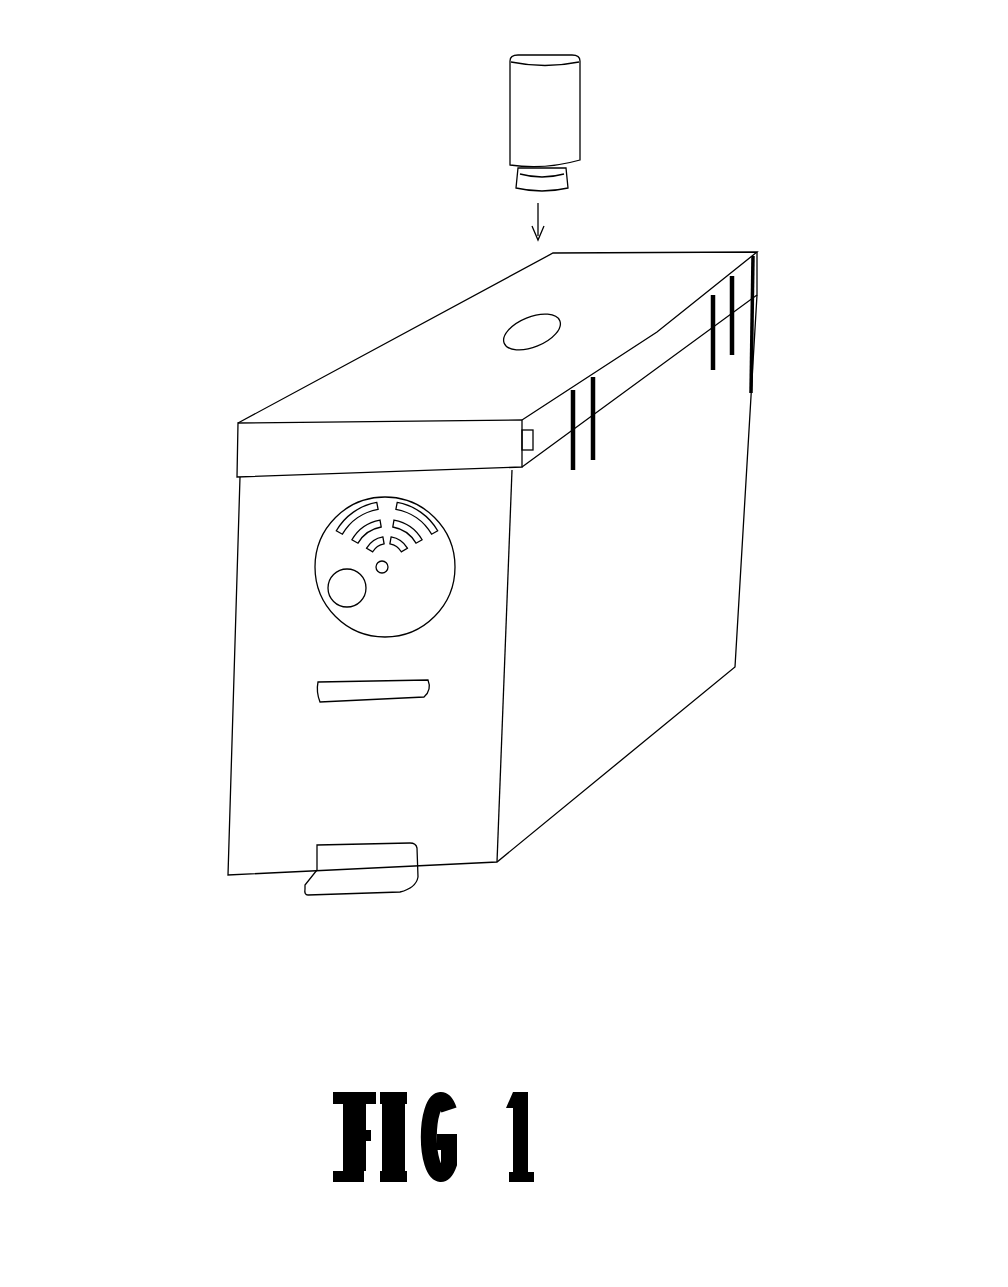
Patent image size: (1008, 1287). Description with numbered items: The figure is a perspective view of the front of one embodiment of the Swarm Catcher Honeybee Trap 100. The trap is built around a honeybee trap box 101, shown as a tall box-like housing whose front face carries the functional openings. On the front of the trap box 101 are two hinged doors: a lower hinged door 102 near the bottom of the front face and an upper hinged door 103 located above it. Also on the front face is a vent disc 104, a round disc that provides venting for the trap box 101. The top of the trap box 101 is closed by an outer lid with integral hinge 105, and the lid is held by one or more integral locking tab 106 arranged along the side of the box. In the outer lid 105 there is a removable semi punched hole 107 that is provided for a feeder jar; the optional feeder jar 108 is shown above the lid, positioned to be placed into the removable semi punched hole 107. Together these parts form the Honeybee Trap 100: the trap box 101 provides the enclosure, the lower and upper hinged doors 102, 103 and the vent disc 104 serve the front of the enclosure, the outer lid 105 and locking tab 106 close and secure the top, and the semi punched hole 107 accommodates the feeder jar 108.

The Honeybee Trap 100 is at (151, 113).
The honeybee trap box 101 is at (632, 682).
The lower hinged door 102 is at (418, 893).
The upper hinged door 103 is at (318, 685).
The vent disc 104 is at (317, 545).
The outer lid with integral hinge 105 is at (412, 357).
The integral locking tab 106 is at (757, 290).
The removable semi punched hole 107 is at (555, 313).
The feeder jar 108 is at (580, 105).